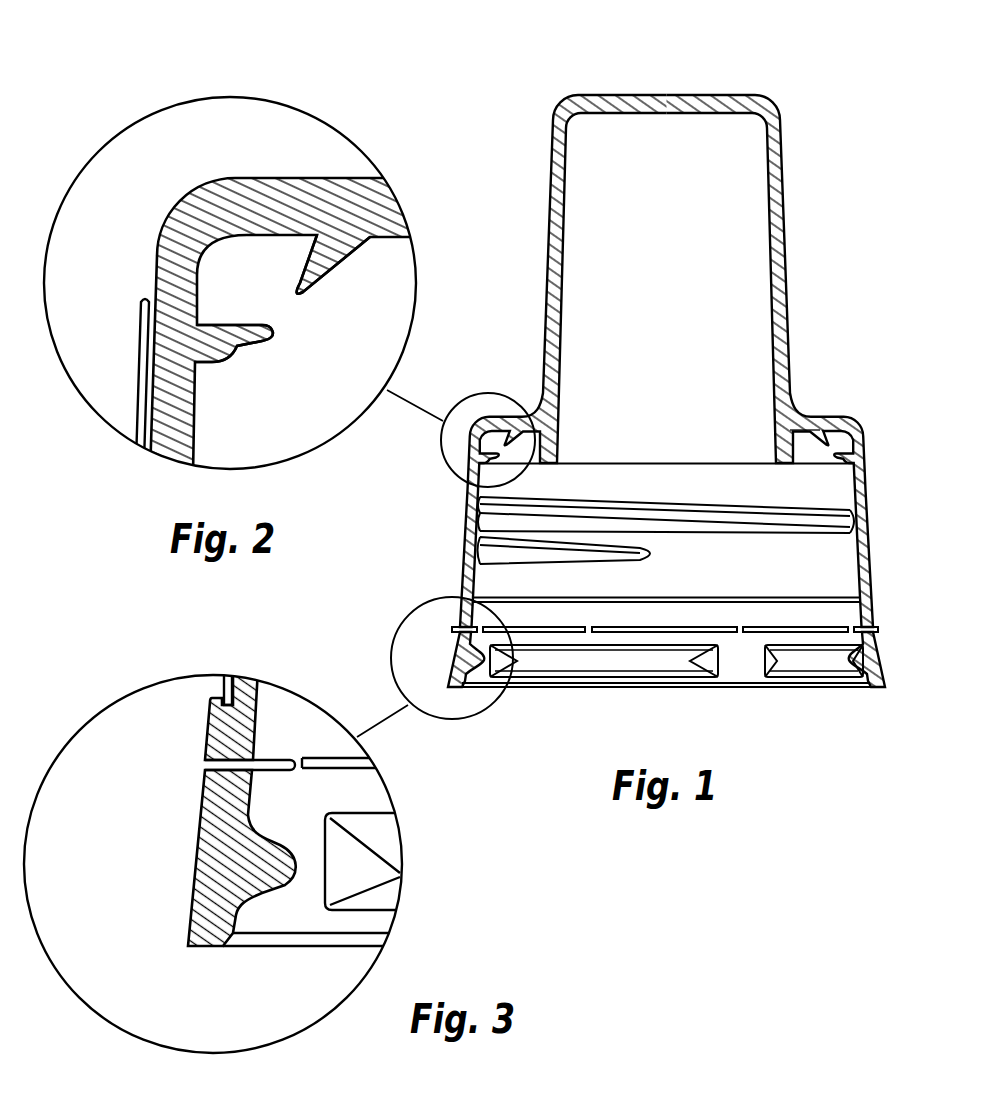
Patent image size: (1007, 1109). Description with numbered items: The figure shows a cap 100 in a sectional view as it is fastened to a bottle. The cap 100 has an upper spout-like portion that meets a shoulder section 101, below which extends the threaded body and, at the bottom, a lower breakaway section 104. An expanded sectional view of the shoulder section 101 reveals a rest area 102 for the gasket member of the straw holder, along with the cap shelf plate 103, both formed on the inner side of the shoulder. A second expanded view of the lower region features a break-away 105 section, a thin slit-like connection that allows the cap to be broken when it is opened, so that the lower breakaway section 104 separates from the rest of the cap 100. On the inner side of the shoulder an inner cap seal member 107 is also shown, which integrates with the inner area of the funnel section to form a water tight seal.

In FIG. 1, the cap 100 is at (556, 100).
In FIG. 1, the shoulder section 101 is at (499, 388).
In FIG. 2, the shoulder section 101 is at (301, 98).
In FIG. 2, the rest area 102 is at (241, 247).
In FIG. 2, the cap shelf plate 103 is at (232, 343).
In FIG. 1, the lower breakaway section 104 is at (507, 703).
In FIG. 3, the lower breakaway section 104 is at (147, 828).
In FIG. 3, the break-away section 105 is at (294, 777).
In FIG. 1, the inner cap seal member 107 is at (772, 450).